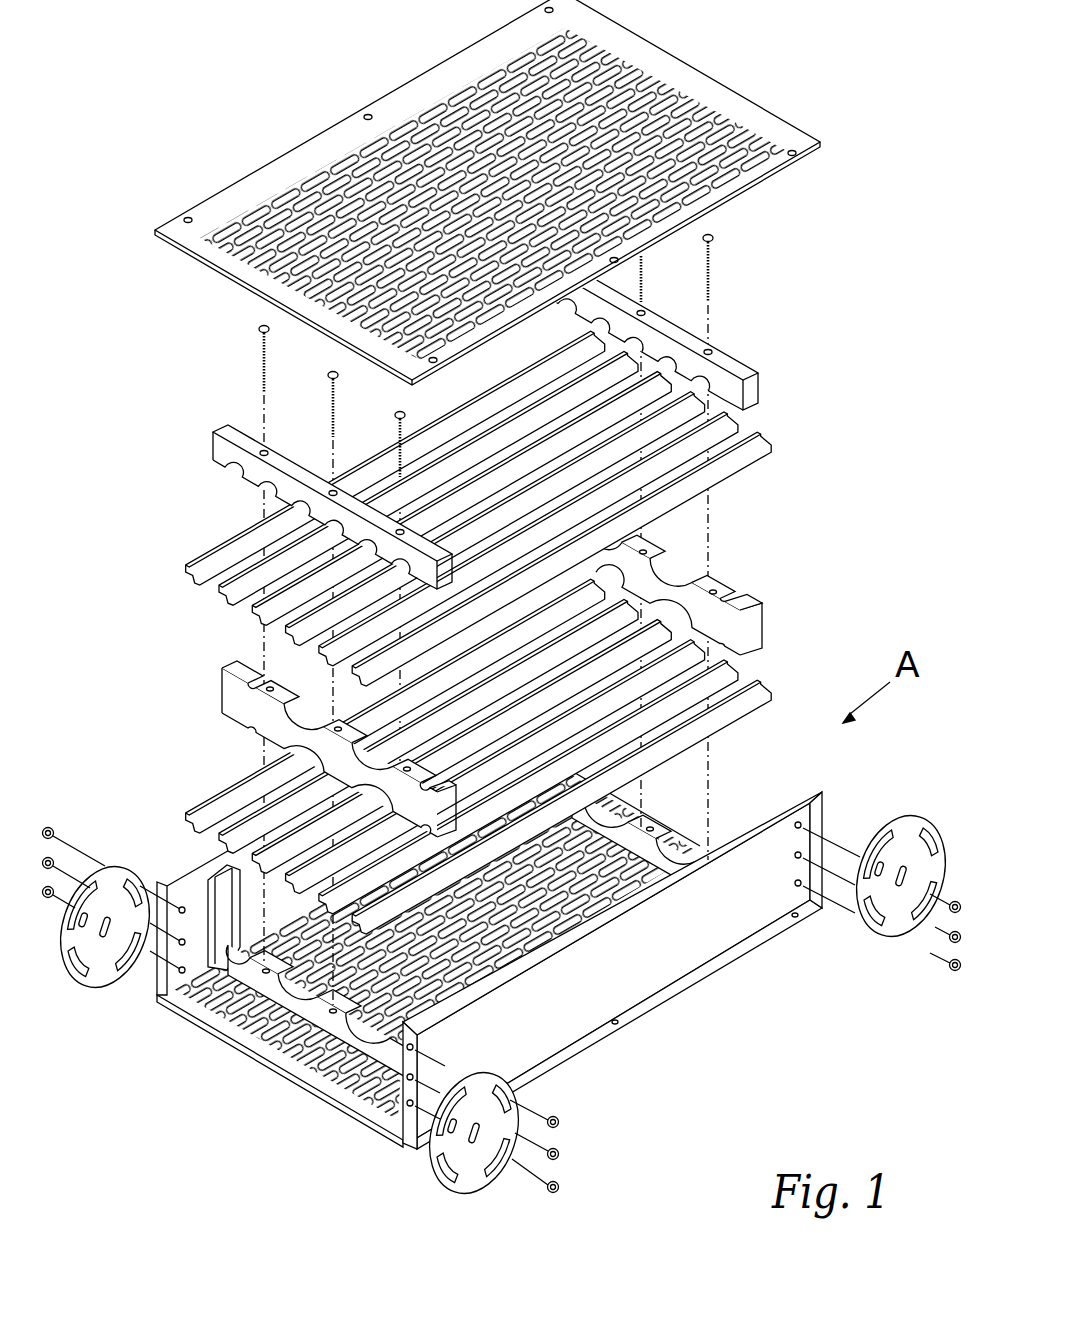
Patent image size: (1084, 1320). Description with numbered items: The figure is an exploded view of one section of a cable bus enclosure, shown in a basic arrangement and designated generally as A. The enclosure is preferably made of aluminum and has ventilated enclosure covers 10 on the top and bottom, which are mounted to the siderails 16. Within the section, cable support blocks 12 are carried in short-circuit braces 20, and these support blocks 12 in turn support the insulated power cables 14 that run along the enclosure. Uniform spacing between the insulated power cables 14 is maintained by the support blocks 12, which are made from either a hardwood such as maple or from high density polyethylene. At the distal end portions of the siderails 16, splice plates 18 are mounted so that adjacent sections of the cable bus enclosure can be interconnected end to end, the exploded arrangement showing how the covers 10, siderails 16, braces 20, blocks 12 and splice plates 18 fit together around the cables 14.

The ventilated enclosure cover 10 is at (268, 163).
The cable support block 12 is at (213, 440).
The insulated power cable 14 is at (185, 568).
The siderail 16 is at (650, 970).
The splice plate 18 is at (882, 816).
The short-circuit brace 20 is at (215, 880).